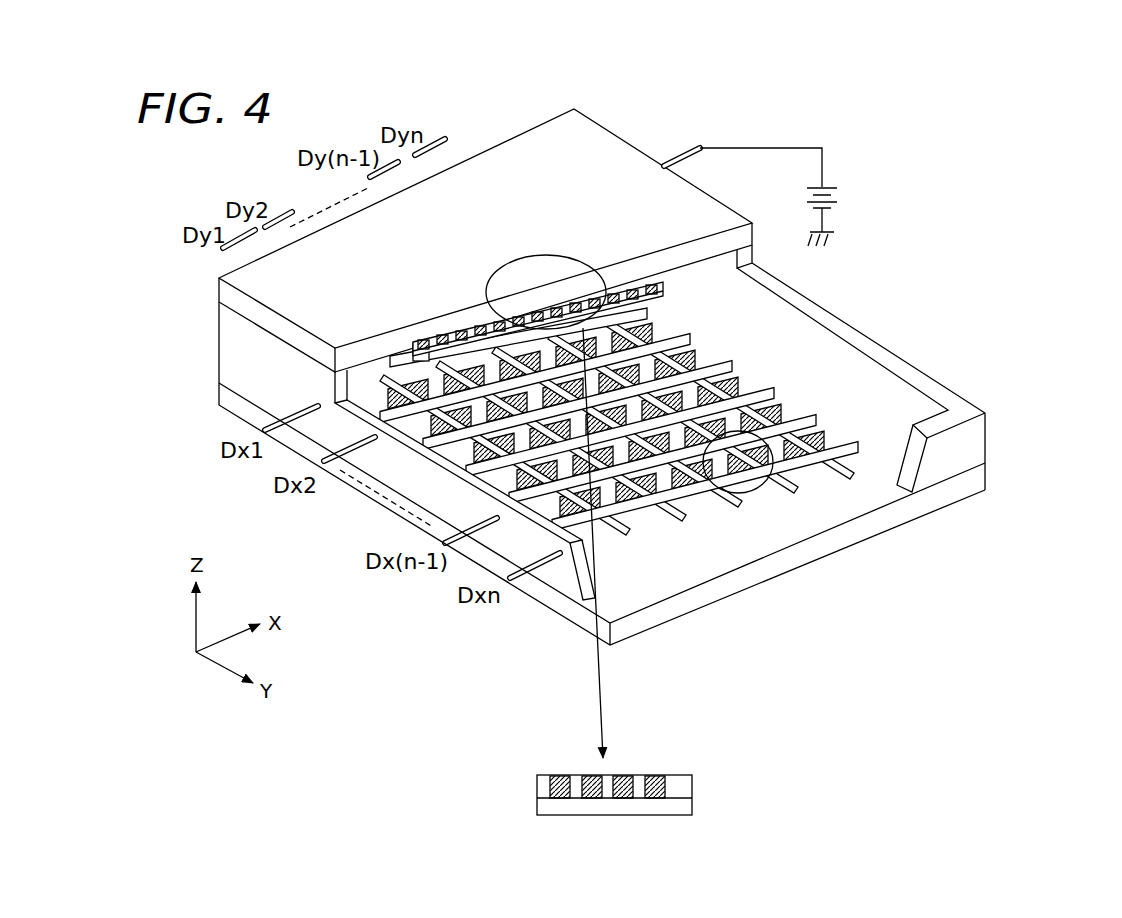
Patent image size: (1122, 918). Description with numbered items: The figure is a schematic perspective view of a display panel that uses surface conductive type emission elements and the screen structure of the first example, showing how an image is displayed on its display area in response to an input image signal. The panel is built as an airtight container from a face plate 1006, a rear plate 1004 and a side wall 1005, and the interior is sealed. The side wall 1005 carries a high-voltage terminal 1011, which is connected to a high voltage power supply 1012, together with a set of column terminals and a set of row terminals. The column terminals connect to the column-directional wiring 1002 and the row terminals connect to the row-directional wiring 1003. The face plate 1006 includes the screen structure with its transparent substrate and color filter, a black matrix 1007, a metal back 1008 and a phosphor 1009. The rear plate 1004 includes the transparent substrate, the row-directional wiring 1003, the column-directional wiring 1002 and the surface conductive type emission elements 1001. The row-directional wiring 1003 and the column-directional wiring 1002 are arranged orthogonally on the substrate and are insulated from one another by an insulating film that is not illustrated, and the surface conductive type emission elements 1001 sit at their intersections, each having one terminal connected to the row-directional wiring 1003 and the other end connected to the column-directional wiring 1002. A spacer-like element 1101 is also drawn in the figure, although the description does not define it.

The surface conductive type emission element 1001 is at (763, 487).
The column-directional wiring 1002 is at (683, 530).
The row-directional wiring 1003 is at (727, 365).
The rear plate 1004 is at (903, 510).
The side wall 1005 is at (913, 462).
The face plate 1006 is at (617, 275).
The black matrix 1007 is at (493, 322).
The metal back 1008 is at (543, 327).
The phosphor 1009 is at (680, 788).
The high-voltage terminal 1011 is at (681, 151).
The high voltage power supply 1012 is at (838, 196).
The spacer 1101 is at (418, 345).